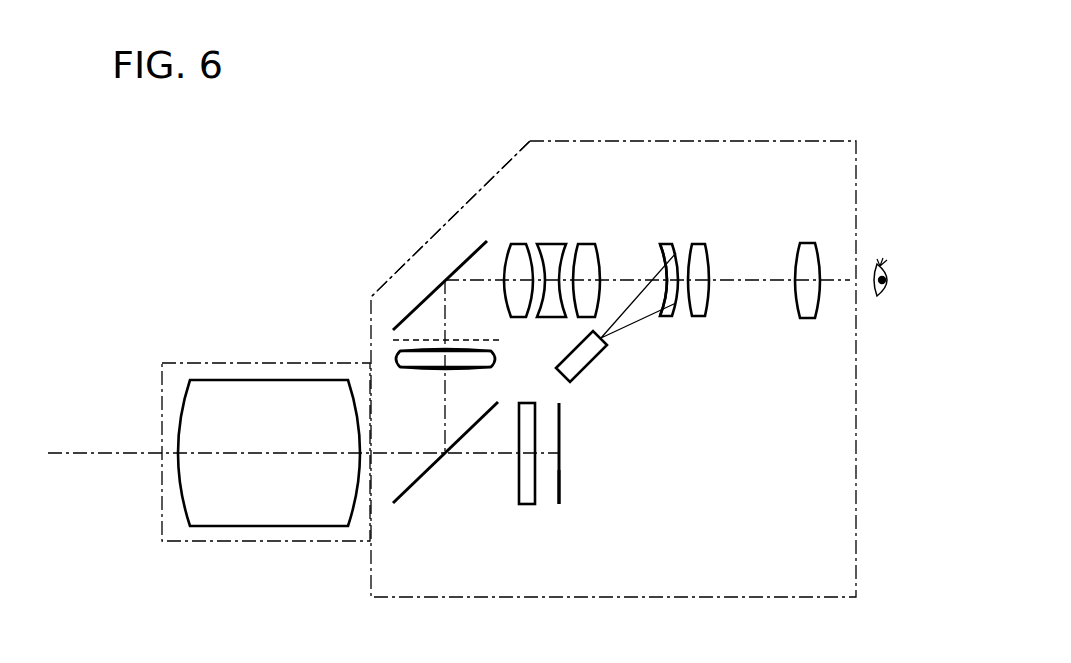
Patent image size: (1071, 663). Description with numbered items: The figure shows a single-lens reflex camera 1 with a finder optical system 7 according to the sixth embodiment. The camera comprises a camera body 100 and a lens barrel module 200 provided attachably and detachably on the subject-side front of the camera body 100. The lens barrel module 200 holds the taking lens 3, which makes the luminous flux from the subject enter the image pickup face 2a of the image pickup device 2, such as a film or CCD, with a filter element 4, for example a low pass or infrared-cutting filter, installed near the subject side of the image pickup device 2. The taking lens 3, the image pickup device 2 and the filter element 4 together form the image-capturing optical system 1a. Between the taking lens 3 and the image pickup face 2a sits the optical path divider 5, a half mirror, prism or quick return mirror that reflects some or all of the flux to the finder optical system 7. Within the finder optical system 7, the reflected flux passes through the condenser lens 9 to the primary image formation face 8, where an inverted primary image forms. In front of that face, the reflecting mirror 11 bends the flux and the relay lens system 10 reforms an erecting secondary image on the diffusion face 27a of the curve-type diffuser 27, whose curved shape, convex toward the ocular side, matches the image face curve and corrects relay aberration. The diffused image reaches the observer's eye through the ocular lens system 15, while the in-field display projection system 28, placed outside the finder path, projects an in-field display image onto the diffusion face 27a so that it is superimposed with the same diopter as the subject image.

The single-lens reflex camera 1 is at (194, 251).
The image-capturing optical system 1a is at (446, 530).
The image pickup device 2 is at (550, 408).
The image pickup face 2a is at (558, 505).
The taking lens 3 is at (238, 380).
The filter element 4 is at (526, 505).
The optical path divider 5 is at (400, 490).
The finder optical system 7 is at (398, 182).
The primary image formation face 8 is at (398, 340).
The condenser lens 9 is at (473, 367).
The relay lens system 10 is at (598, 229).
The reflecting mirror 11 is at (423, 298).
The ocular lens system 15 is at (818, 255).
The curve-type diffuser 27 is at (668, 245).
The diffusion face 27a is at (660, 252).
The in-field display projection system 28 is at (603, 358).
The camera body 100 is at (856, 447).
The lens barrel module 200 is at (162, 397).